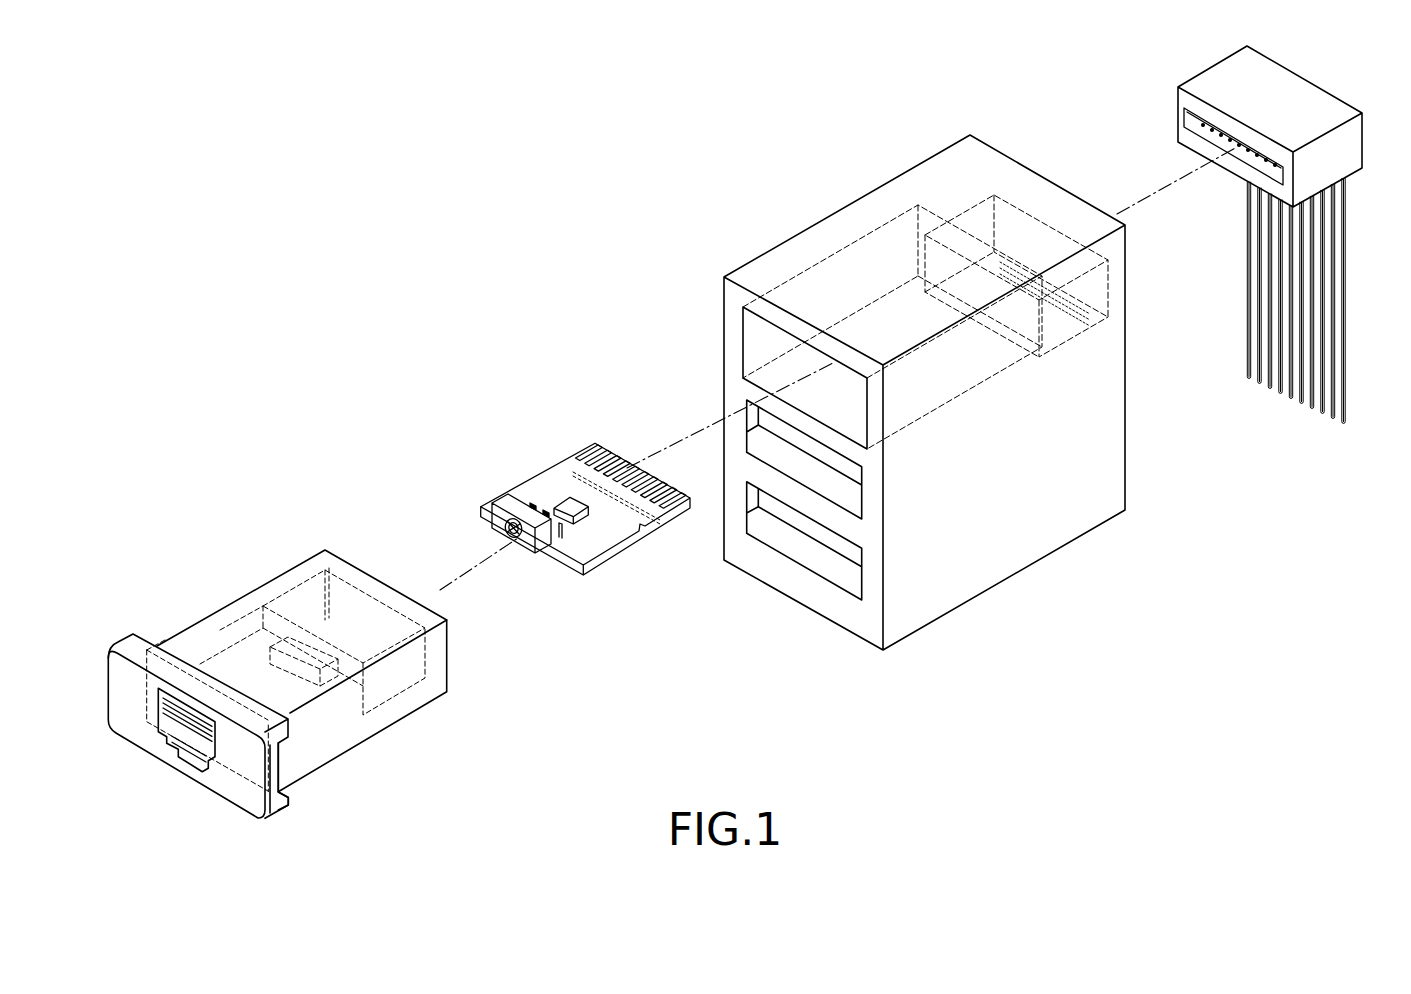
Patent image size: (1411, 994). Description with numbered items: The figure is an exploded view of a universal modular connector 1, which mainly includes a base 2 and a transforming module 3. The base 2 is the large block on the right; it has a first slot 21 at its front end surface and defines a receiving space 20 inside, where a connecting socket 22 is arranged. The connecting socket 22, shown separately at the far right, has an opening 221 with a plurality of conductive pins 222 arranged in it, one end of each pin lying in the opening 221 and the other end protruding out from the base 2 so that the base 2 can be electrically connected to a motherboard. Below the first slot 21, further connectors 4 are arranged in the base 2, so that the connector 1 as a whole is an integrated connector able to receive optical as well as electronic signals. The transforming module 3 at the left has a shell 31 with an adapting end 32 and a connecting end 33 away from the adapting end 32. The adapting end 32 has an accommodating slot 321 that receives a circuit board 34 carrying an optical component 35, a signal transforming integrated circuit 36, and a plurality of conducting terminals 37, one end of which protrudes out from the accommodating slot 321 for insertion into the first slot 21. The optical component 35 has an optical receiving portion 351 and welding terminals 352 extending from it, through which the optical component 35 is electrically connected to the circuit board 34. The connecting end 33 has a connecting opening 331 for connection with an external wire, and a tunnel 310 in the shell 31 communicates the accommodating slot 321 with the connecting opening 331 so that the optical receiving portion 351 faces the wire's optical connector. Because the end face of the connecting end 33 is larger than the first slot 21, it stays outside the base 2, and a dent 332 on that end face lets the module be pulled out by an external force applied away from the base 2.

The universal modular connector 1 is at (471, 189).
The base 2 is at (862, 166).
The receiving space 20 is at (1020, 228).
The first slot 21 is at (758, 330).
The connecting socket 22 is at (1303, 98).
The opening 221 is at (1235, 147).
The conductive pins 222 is at (1262, 320).
The transforming module 3 is at (378, 470).
The shell 31 is at (357, 735).
The tunnel 310 is at (315, 650).
The adapting end 32 is at (452, 655).
The accommodating slot 321 is at (357, 615).
The connecting end 33 is at (237, 790).
The connecting opening 331 is at (192, 757).
The dent 332 is at (287, 807).
The circuit board 34 is at (553, 482).
The optical component 35 is at (507, 503).
The optical receiving portion 351 is at (503, 540).
The welding terminals 352 is at (567, 538).
The signal transforming integrated circuit 36 is at (588, 516).
The conducting terminals 37 is at (593, 444).
The connector 4 is at (820, 533).